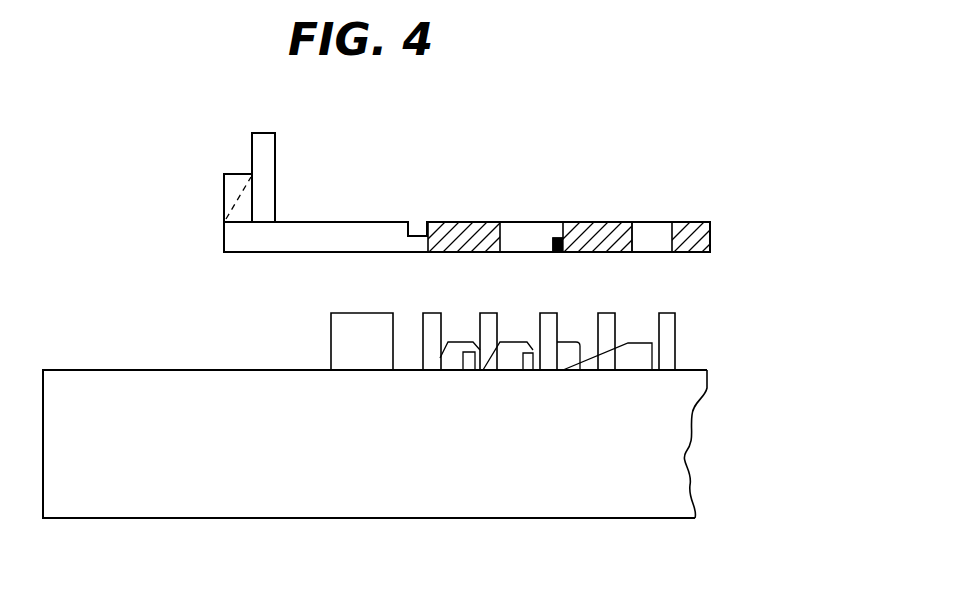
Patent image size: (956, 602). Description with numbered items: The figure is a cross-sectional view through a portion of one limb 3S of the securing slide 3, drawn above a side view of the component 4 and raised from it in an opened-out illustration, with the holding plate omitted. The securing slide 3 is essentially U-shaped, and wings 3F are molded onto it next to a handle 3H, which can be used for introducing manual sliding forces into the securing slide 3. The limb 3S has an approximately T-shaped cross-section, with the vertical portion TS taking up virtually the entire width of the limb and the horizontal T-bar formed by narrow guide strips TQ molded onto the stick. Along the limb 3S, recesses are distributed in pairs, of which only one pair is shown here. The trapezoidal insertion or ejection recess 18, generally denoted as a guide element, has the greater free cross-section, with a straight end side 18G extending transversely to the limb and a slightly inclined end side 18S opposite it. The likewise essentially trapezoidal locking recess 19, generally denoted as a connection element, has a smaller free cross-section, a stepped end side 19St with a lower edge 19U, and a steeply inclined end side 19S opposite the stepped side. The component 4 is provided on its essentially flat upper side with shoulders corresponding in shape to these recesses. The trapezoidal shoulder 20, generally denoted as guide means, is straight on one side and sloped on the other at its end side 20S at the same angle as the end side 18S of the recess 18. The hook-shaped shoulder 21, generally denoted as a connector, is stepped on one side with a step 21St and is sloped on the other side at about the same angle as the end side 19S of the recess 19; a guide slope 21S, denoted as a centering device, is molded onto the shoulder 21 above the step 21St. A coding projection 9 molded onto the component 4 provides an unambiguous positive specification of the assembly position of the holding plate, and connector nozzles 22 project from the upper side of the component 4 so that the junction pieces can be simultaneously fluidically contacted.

The securing slide 3 is at (629, 168).
The handle 3H is at (267, 140).
The wings 3F is at (232, 190).
The limb 3S is at (703, 247).
The guide strip TQ is at (427, 225).
The vertical portion TS is at (417, 245).
The steeply inclined end side 19S is at (500, 227).
The locking recess 19 is at (534, 232).
The stepped end side 19St is at (563, 232).
The lower edge 19U is at (553, 251).
The inclined end side 18S is at (633, 223).
The insertion or ejection recess 18 is at (652, 230).
The straight end side 18G is at (673, 230).
The component 4 is at (147, 368).
The coding projection 9 is at (348, 342).
The connector nozzles 22 is at (608, 322).
The guide slope 21S is at (541, 357).
The hook-shaped shoulder 21 is at (508, 358).
The step 21St is at (528, 357).
The end side 20S is at (638, 362).
The trapezoidal shoulder 20 is at (643, 373).